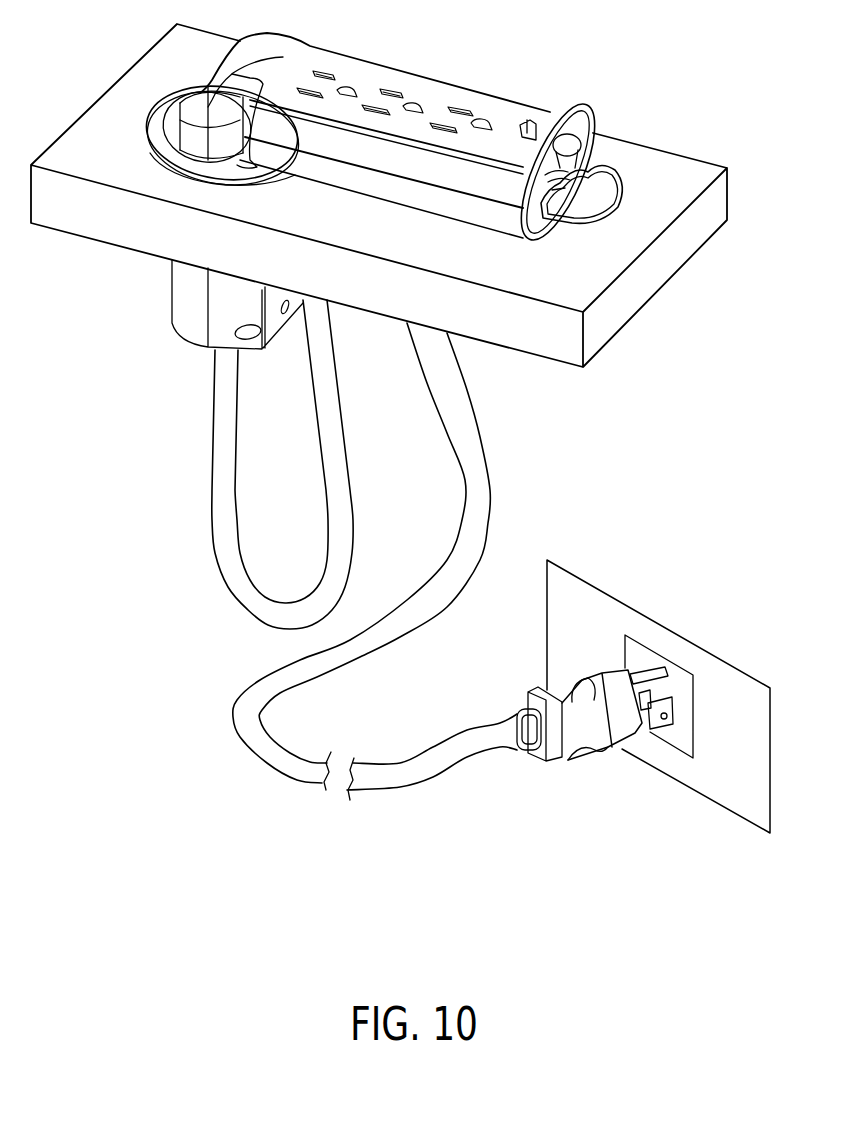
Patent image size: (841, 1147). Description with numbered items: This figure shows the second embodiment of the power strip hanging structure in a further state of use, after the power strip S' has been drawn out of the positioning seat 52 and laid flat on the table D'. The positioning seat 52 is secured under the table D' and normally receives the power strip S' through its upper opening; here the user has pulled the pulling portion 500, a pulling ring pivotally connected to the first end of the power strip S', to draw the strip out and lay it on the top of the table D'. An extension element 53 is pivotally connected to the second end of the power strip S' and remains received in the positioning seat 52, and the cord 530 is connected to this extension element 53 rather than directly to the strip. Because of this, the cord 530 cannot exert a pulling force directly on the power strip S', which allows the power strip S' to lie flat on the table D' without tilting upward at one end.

The positioning seat 52 is at (157, 115).
The extension element 53 is at (200, 294).
The cord 530 is at (230, 544).
The pulling portion 500 is at (608, 178).
The power strip S' is at (375, 125).
The table D' is at (379, 195).